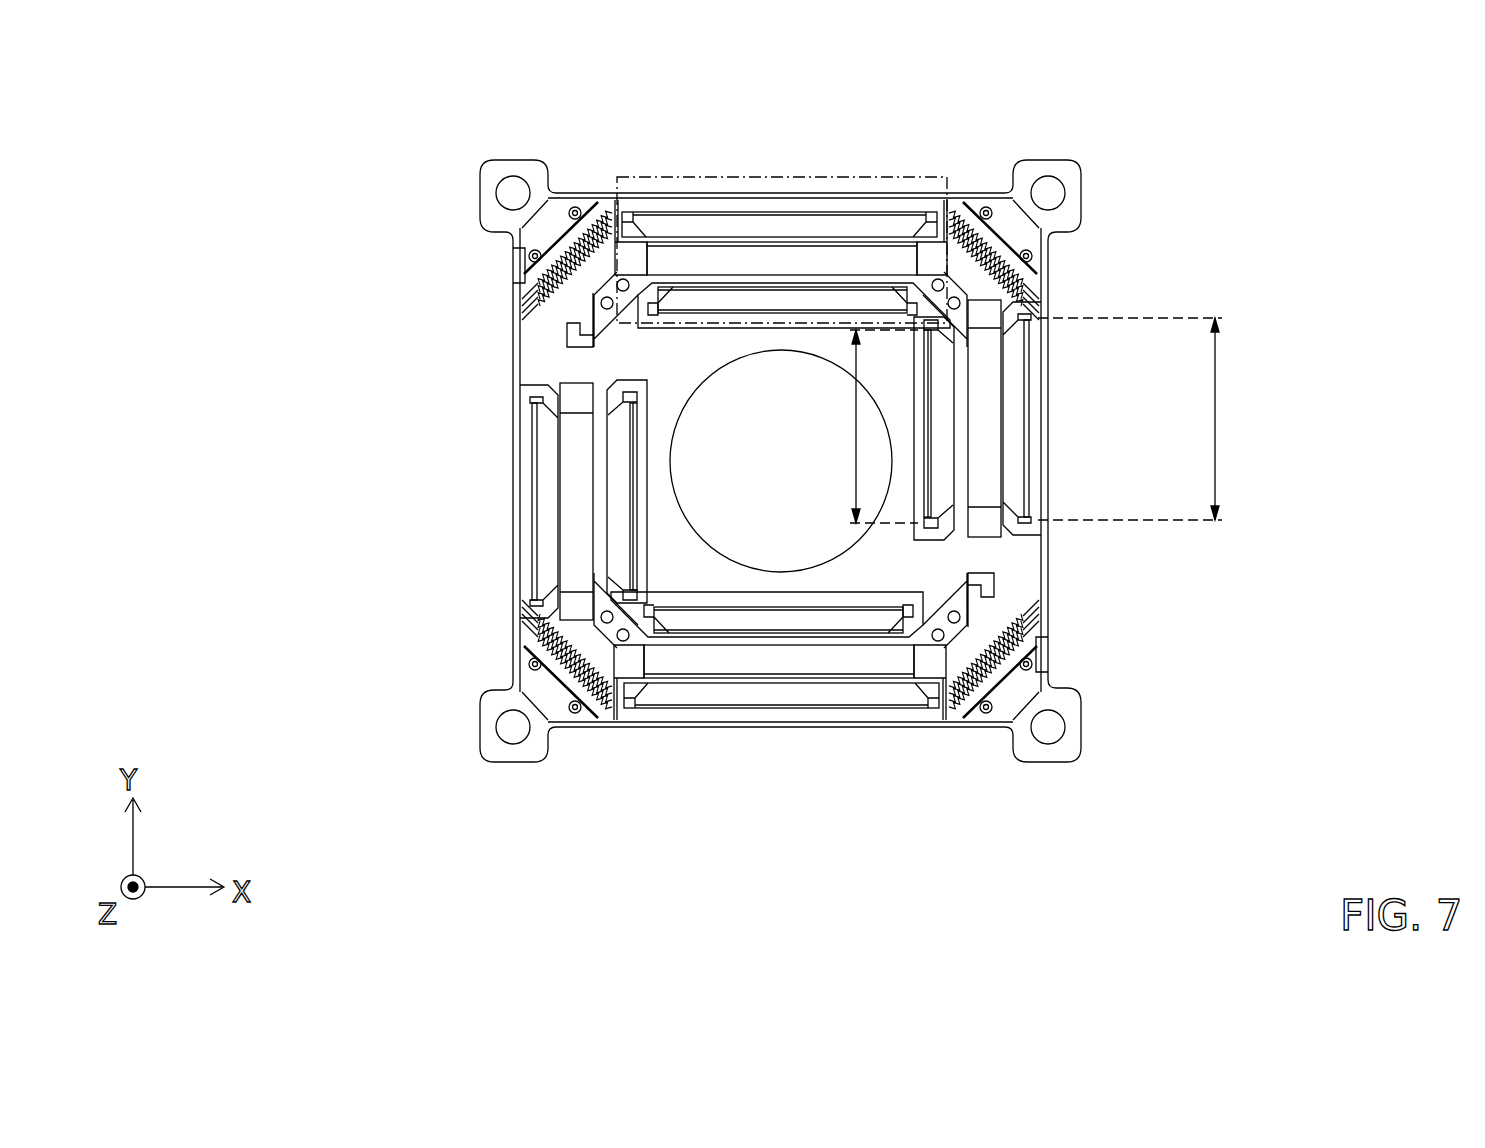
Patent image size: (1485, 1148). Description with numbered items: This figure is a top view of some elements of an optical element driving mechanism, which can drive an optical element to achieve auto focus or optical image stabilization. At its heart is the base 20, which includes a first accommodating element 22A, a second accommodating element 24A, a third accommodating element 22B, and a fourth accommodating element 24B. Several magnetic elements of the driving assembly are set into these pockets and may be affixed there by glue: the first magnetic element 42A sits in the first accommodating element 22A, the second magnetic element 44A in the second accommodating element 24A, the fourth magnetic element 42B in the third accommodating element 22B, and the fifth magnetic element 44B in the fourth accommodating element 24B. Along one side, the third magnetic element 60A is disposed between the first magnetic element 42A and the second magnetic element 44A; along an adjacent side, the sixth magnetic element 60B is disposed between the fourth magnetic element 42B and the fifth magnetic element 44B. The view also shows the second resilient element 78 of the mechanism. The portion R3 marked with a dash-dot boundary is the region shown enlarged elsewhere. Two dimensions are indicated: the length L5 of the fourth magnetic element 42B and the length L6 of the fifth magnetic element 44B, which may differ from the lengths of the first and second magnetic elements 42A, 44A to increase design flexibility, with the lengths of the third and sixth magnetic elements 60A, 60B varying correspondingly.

The base 20 is at (1020, 610).
The first accommodating element 22A is at (822, 205).
The third accommodating element 22B is at (522, 572).
The second accommodating element 24A is at (735, 275).
The fourth accommodating element 24B is at (612, 388).
The first magnetic element 42A is at (681, 228).
The fourth magnetic element 42B is at (537, 537).
The second magnetic element 44A is at (866, 305).
The fifth magnetic element 44B is at (620, 455).
The third magnetic element 60A is at (772, 260).
The sixth magnetic element 60B is at (575, 497).
The second resilient element 78 is at (1037, 268).
The portion R3 is at (932, 183).
The length L5 is at (1146, 419).
The length L6 is at (865, 426).